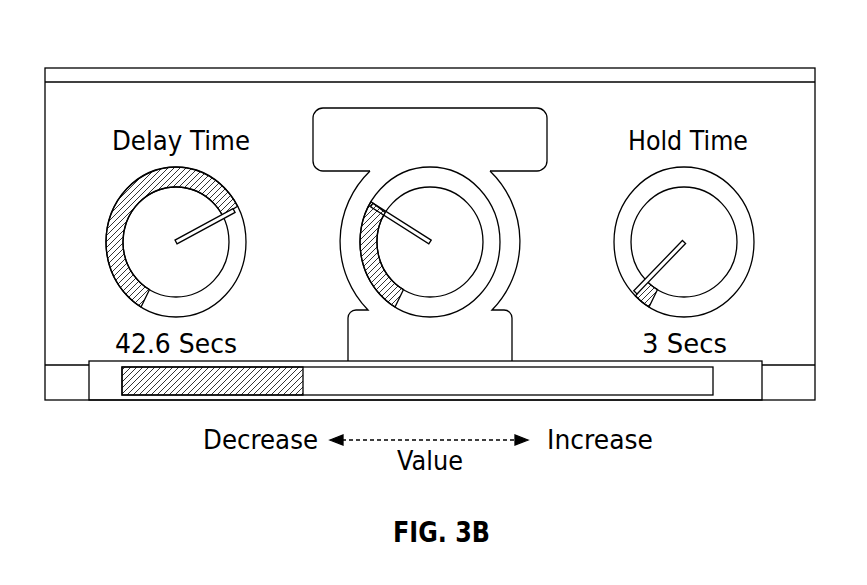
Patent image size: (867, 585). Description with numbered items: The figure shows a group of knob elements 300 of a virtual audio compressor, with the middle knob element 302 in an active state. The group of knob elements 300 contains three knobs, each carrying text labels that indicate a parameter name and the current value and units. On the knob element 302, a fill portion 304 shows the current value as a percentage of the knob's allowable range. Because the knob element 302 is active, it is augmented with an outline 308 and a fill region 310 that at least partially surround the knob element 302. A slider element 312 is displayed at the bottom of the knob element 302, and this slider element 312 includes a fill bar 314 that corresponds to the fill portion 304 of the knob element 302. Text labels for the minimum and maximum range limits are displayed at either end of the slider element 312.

The group of knob elements 300 is at (108, 68).
The knob element 302 is at (500, 233).
The fill portion 304 is at (368, 258).
The outline 308 is at (505, 108).
The fill region 310 is at (430, 120).
The slider element 312 is at (752, 361).
The fill bar 314 is at (294, 368).